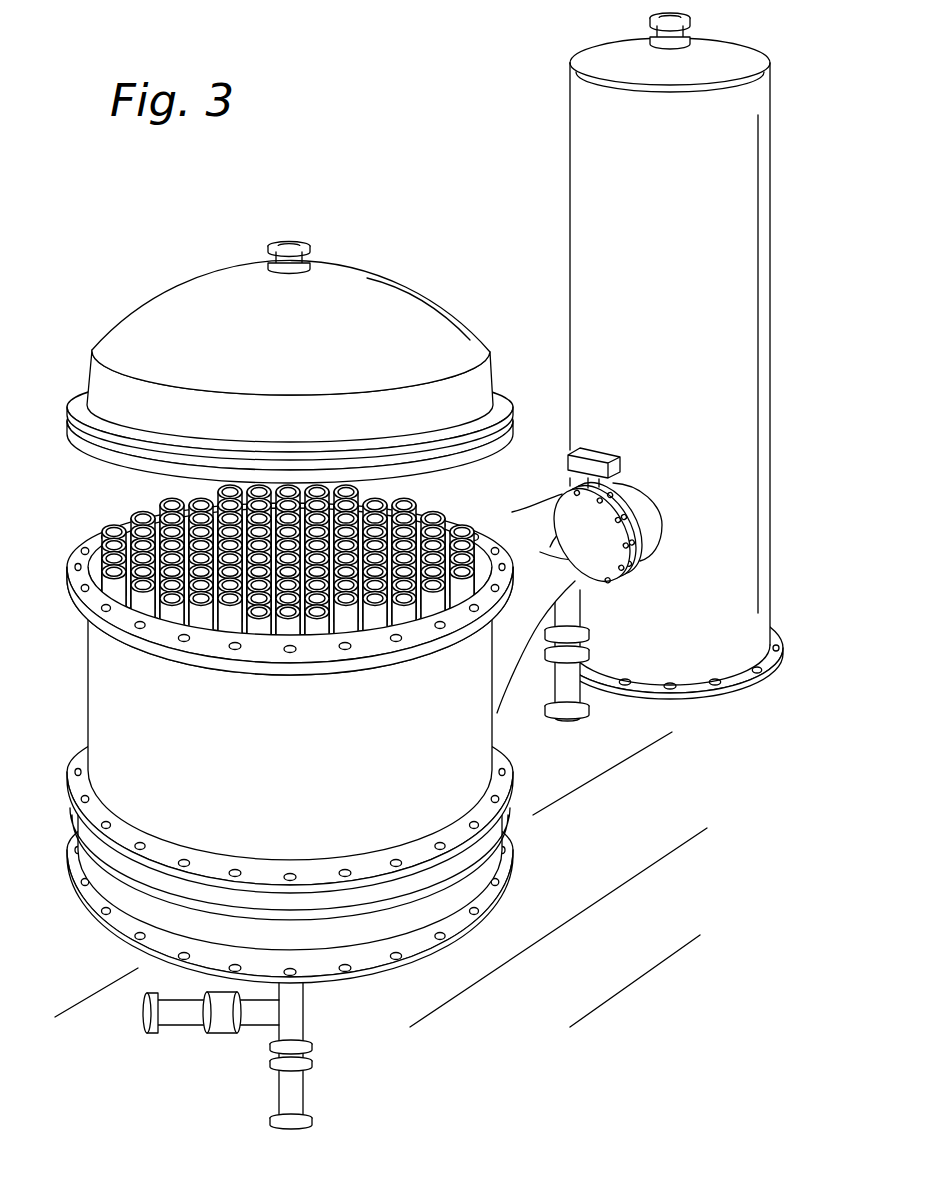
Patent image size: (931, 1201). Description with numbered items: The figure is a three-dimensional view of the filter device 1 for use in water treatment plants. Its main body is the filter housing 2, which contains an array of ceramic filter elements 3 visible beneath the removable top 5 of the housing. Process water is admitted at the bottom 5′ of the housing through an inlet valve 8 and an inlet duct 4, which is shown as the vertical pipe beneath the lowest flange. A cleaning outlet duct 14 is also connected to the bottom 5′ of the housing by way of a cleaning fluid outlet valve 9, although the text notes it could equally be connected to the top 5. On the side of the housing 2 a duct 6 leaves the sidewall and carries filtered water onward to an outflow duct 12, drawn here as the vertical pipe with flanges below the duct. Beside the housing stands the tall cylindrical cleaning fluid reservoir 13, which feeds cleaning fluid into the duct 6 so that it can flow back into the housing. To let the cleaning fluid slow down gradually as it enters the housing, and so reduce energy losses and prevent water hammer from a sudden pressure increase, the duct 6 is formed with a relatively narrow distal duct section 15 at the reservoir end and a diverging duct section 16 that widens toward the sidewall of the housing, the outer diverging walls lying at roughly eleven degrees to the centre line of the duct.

The filter device 1 is at (473, 171).
The filter housing 2 is at (122, 680).
The filter elements 3 is at (157, 535).
The inlet duct 4 is at (300, 1005).
The top 5 is at (390, 305).
The bottom 5′ is at (380, 965).
The duct 6 is at (543, 583).
The inlet valve 8 is at (290, 1058).
The cleaning fluid outlet valve 9 is at (220, 1027).
The outflow duct 12 is at (557, 700).
The cleaning fluid reservoir 13 is at (608, 303).
The cleaning outlet duct 14 is at (182, 1013).
The distal duct section 15 is at (600, 547).
The diverging duct section 16 is at (505, 618).